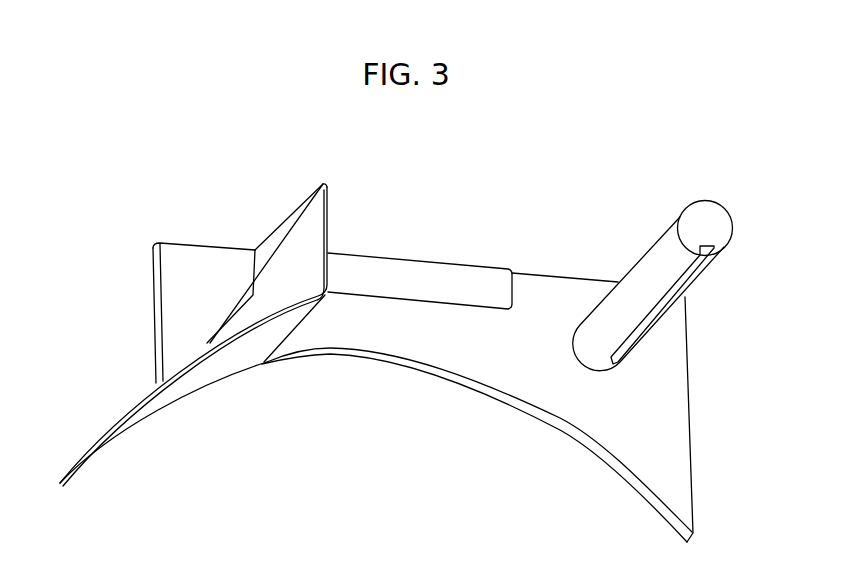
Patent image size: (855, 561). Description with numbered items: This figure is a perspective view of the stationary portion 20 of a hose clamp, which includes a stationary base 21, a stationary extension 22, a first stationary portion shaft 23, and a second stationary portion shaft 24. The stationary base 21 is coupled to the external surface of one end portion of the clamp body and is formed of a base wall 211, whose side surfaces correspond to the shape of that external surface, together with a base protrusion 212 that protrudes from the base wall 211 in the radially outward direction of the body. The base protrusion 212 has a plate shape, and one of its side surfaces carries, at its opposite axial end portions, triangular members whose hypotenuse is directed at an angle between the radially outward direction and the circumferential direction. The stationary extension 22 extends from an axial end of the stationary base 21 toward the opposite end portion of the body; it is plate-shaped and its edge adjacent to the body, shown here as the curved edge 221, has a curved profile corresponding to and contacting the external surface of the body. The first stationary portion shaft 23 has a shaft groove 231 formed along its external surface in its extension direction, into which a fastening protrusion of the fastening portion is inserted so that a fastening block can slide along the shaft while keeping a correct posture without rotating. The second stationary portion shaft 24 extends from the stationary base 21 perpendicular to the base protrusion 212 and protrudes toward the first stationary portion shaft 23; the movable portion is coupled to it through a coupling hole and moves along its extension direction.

The stationary portion 20 is at (503, 537).
The stationary base 21 is at (142, 411).
The base wall 211 is at (203, 375).
The base protrusion 212 is at (327, 197).
The stationary extension 22 is at (438, 373).
The upper edge of support strip 221 is at (332, 351).
The first stationary portion shaft 23 is at (715, 200).
The shaft groove 231 is at (712, 267).
The second stationary portion shaft 24 is at (437, 268).